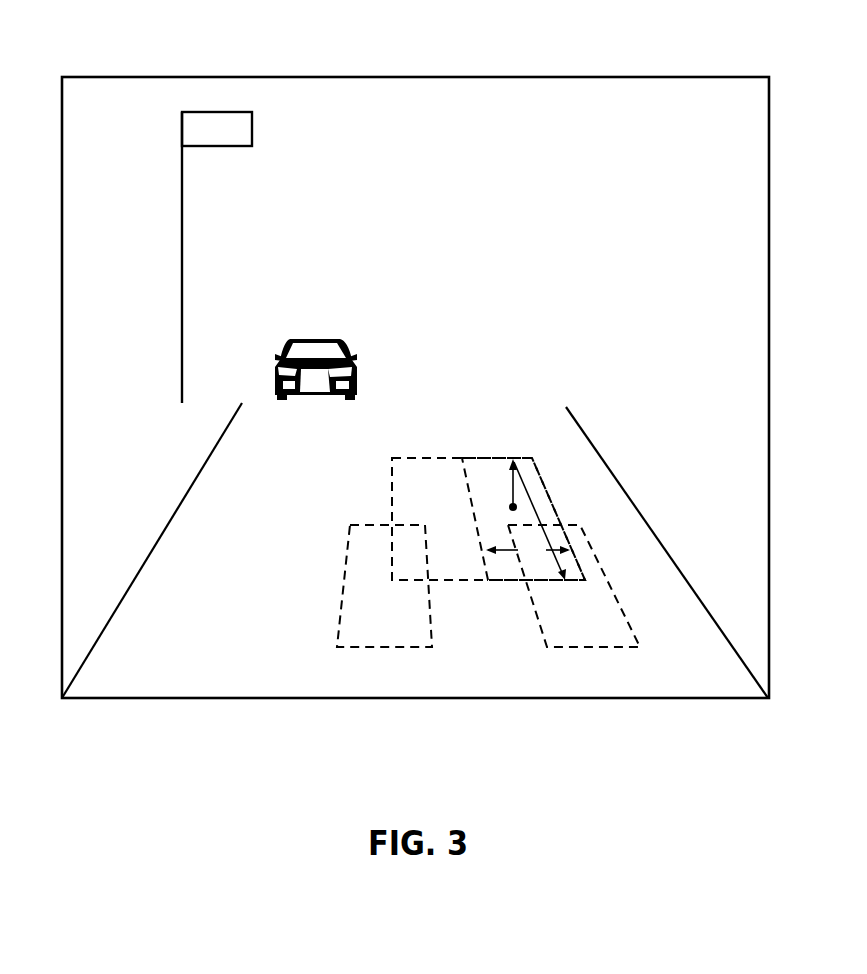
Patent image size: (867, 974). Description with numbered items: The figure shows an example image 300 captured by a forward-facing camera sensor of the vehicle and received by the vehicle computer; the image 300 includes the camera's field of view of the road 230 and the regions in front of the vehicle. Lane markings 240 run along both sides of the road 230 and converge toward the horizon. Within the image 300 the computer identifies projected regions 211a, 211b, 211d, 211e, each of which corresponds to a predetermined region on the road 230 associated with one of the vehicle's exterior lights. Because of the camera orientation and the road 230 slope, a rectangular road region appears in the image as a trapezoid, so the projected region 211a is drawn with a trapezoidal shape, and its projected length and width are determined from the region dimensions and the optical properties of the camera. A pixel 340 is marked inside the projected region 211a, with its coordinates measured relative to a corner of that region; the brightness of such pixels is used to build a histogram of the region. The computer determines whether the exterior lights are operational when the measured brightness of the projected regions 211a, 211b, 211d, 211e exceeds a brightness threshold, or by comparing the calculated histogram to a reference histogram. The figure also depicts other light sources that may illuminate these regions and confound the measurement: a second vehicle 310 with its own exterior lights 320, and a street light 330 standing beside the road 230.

The image 300 is at (533, 77).
The street light 330 is at (183, 263).
The second vehicle 310 is at (328, 328).
The exterior lights 320 is at (340, 376).
The lane markings 240 is at (195, 479).
The road 230 is at (485, 488).
The pixel 340 is at (511, 502).
The projected region 211a is at (548, 496).
The projected region 211b is at (621, 599).
The projected region 211d is at (392, 480).
The projected region 211e is at (343, 582).